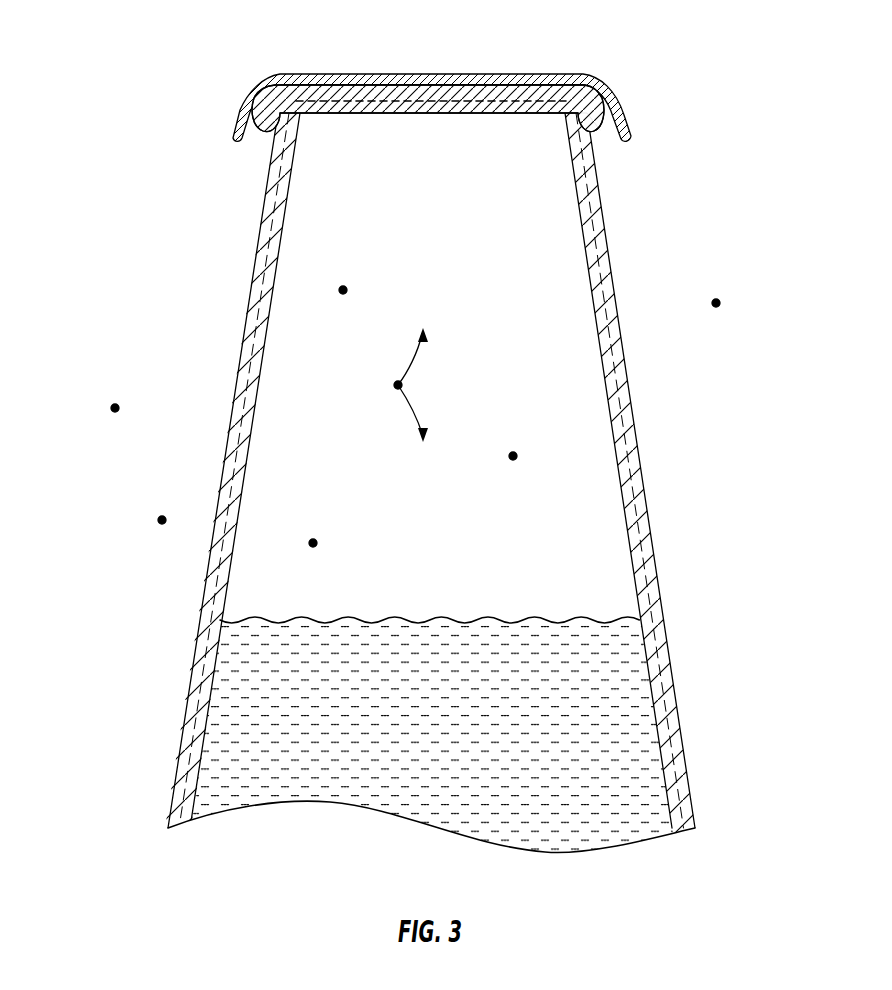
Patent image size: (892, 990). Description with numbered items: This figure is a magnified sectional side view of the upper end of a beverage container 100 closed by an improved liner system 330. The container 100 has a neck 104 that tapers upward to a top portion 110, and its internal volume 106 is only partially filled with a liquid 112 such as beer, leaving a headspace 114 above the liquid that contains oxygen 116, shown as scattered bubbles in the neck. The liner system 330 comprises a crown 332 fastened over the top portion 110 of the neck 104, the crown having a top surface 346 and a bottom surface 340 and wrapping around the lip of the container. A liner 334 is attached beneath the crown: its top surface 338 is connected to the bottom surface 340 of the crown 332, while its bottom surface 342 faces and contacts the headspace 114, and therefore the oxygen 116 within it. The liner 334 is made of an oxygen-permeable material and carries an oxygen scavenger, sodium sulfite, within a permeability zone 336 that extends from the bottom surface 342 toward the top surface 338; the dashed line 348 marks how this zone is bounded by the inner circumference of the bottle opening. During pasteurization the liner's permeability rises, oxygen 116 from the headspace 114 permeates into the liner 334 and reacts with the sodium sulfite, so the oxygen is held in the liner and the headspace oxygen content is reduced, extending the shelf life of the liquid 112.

The beverage container 100 is at (482, 490).
The neck 104 is at (665, 652).
The internal volume 106 is at (640, 737).
The top portion of the neck 110 is at (575, 106).
The liquid 112 is at (232, 720).
The headspace 114 is at (580, 432).
The oxygen 116 is at (347, 289).
The liner system 330 is at (489, 96).
The crown 332 is at (440, 75).
The liner 334 is at (428, 103).
The permeability zone 336 is at (374, 110).
The top surface of the liner 338 is at (380, 78).
The bottom surface of the crown 340 is at (508, 92).
The bottom surface of the liner 342 is at (525, 114).
The top surface of the crown 346 is at (308, 72).
The dashed line 348 is at (455, 110).